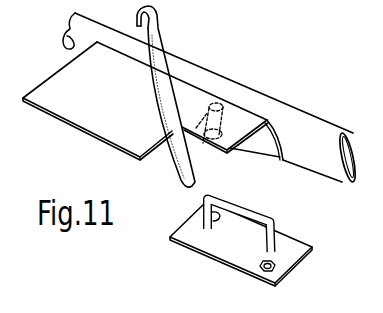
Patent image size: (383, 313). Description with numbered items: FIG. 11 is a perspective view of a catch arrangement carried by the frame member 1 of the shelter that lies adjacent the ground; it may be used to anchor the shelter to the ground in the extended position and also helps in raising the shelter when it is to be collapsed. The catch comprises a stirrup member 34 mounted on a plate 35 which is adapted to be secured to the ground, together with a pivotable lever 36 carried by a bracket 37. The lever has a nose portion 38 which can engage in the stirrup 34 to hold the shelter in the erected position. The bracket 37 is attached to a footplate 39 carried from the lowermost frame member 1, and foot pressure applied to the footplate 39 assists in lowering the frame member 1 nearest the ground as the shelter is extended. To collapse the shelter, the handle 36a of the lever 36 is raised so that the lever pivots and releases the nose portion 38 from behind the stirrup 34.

The frame member 1 is at (304, 124).
The stirrup member 34 is at (265, 221).
The plate 35 is at (293, 245).
The pivotable lever 36 is at (174, 154).
The handle 36a is at (157, 32).
The bracket 37 is at (209, 152).
The nose portion 38 is at (221, 157).
The footplate 39 is at (98, 133).